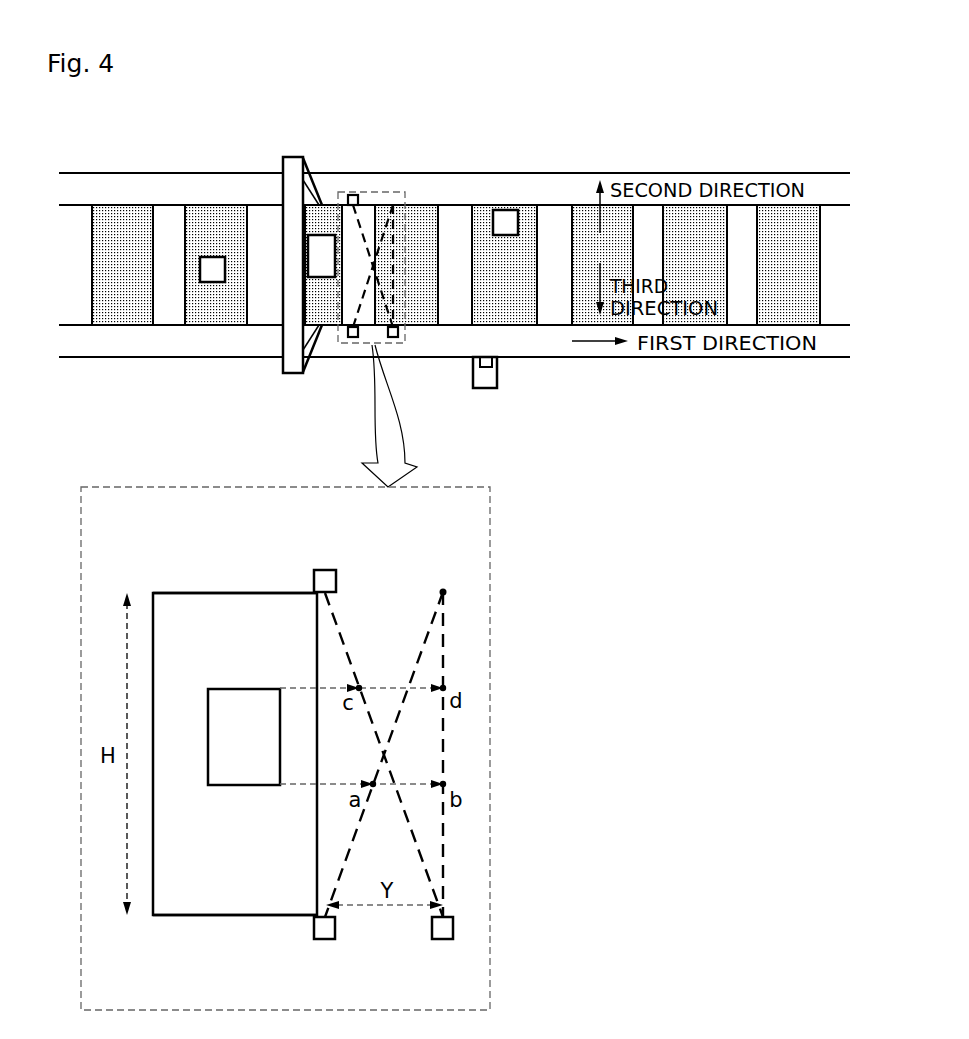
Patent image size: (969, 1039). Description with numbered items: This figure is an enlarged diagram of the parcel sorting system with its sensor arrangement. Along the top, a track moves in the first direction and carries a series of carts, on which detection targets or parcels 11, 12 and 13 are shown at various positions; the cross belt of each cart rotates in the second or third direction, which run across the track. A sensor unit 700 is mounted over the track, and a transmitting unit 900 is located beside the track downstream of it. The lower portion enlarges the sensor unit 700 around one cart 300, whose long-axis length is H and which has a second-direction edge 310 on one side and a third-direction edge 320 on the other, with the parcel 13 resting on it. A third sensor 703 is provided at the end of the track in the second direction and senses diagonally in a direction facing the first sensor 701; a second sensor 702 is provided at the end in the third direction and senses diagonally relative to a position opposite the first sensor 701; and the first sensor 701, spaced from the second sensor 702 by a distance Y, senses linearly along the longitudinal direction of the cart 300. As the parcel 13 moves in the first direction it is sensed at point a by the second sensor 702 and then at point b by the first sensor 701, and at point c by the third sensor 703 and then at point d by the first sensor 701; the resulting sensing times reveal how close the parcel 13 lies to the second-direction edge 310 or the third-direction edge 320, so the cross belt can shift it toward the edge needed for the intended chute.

The first detection target 11 is at (211, 283).
The second detection target 12 is at (506, 209).
The parcel 13 is at (322, 234).
The sensor unit 700 is at (382, 192).
The transmitting unit 900 is at (485, 389).
The cart 300 is at (240, 912).
The second-direction edge 310 is at (170, 592).
The third-direction edge 320 is at (177, 917).
The first sensor 701 is at (442, 941).
The second sensor 702 is at (326, 941).
The third sensor 703 is at (327, 569).